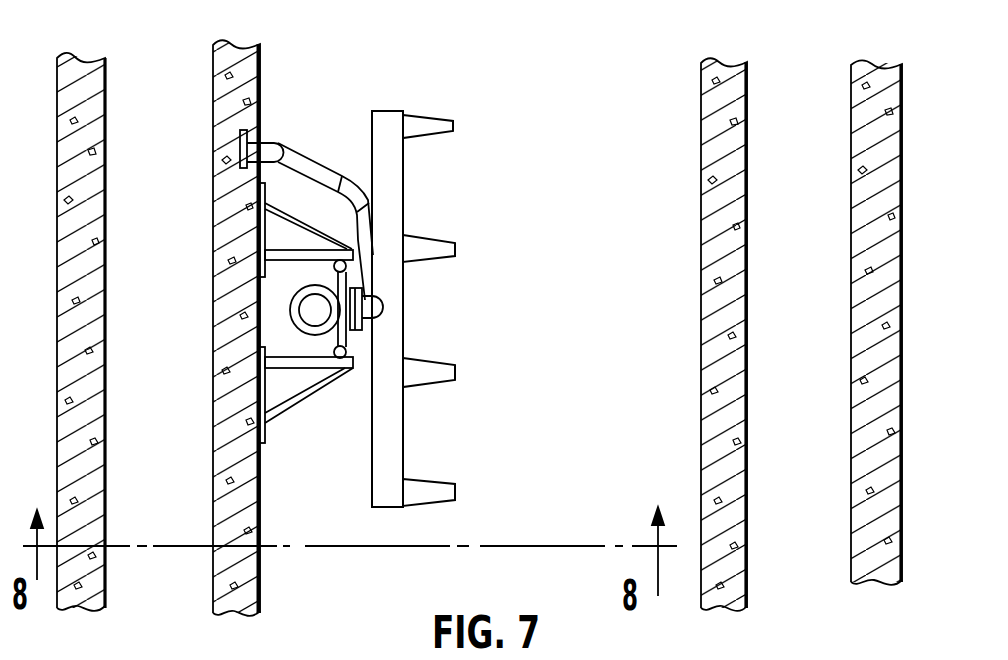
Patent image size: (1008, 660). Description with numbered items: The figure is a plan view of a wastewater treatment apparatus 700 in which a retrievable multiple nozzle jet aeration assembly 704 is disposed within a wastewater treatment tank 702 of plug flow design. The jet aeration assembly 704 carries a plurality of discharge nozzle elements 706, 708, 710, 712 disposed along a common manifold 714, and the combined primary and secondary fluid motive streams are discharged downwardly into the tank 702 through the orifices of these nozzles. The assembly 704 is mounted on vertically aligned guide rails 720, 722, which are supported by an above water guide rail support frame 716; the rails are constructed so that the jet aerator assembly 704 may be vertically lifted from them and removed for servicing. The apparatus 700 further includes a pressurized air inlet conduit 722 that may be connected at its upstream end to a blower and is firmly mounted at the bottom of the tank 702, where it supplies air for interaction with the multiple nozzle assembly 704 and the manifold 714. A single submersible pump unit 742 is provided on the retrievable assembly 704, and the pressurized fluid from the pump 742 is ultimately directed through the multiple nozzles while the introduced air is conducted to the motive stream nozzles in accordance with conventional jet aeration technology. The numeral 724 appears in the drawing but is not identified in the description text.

The wastewater treatment apparatus 700 is at (540, 131).
The wastewater treatment tank 702 is at (250, 83).
The retrievable jet aeration assembly 704 is at (378, 306).
The discharge nozzle element 706 is at (428, 125).
The discharge nozzle element 708 is at (437, 242).
The discharge nozzle element 710 is at (442, 365).
The discharge nozzle element 712 is at (435, 488).
The common manifold 714 is at (400, 186).
The guide rail support frame 716 is at (338, 362).
The guide rail 720 is at (338, 352).
The guide rail 722 is at (335, 268).
The support arm 724 is at (307, 168).
The submersible pump unit 742 is at (310, 310).